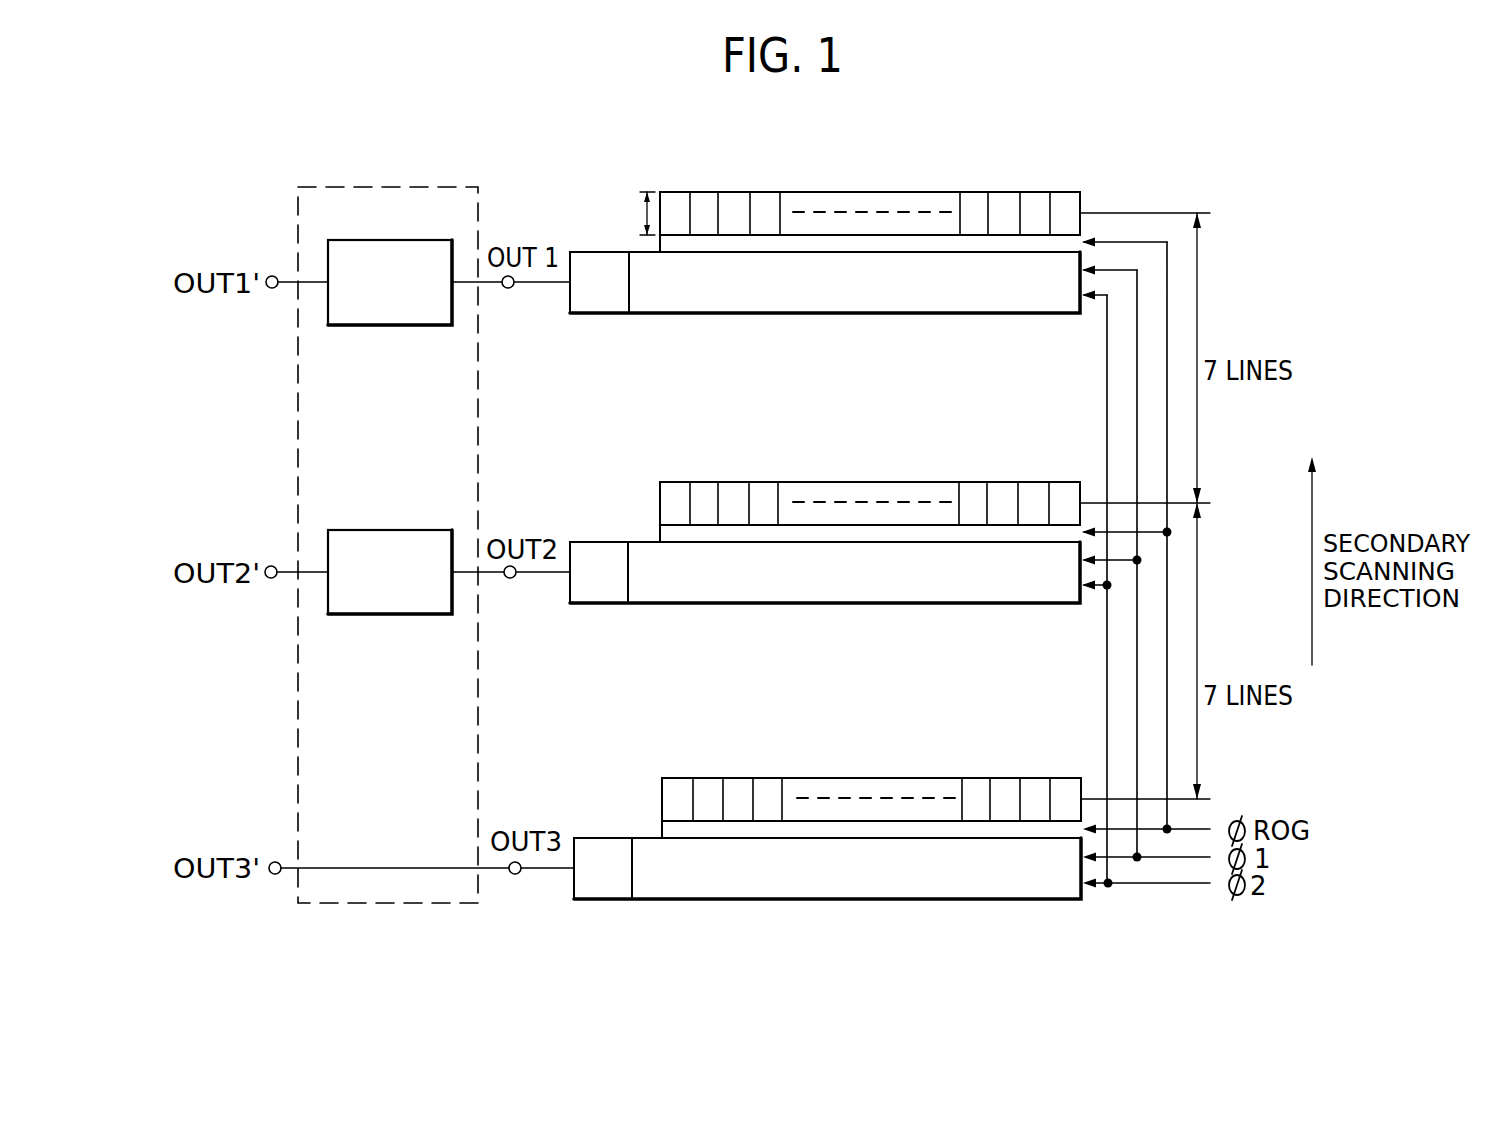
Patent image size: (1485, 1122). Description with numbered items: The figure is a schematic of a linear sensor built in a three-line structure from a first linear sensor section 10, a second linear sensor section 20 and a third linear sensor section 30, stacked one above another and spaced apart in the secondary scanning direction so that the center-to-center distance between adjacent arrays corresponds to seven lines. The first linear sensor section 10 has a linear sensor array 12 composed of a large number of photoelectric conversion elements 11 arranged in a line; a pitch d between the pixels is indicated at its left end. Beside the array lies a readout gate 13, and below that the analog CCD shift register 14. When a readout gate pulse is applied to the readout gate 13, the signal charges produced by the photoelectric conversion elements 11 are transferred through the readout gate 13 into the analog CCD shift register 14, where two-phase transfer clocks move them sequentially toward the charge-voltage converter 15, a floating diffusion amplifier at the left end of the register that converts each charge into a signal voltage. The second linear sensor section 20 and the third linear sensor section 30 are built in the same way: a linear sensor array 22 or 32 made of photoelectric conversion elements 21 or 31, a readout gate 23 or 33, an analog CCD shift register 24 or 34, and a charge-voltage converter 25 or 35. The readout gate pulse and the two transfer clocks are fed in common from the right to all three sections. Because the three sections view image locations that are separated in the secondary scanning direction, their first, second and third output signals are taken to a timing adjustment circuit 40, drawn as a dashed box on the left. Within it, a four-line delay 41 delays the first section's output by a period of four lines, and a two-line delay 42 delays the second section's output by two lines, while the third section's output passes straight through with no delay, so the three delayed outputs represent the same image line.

The first linear sensor section 10 is at (616, 211).
The photoelectric conversion elements 11 is at (667, 203).
The linear sensor array 12 is at (972, 190).
The readout gate 13 is at (752, 248).
The analog CCD shift register 14 is at (971, 317).
The charge-voltage converter 15 is at (583, 317).
The second linear sensor section 20 is at (615, 498).
The light receiving elements (photodiodes) of second line sensor 21 is at (672, 491).
The linear sensor array 22 is at (976, 479).
The readout gate 23 is at (753, 540).
The analog CCD shift register 24 is at (974, 606).
The charge-voltage converter 25 is at (581, 606).
The third linear sensor section 30 is at (615, 790).
The light receiving elements (photodiodes) of third line sensor 31 is at (676, 789).
The linear sensor array 32 is at (979, 774).
The readout gate 33 is at (758, 834).
The analog CCD shift register 34 is at (992, 902).
The charge-voltage converter 35 is at (605, 902).
The timing adjustment circuit 40 is at (297, 196).
The 4-line delay circuit 41 is at (383, 240).
The 2-line delay circuit 42 is at (381, 530).